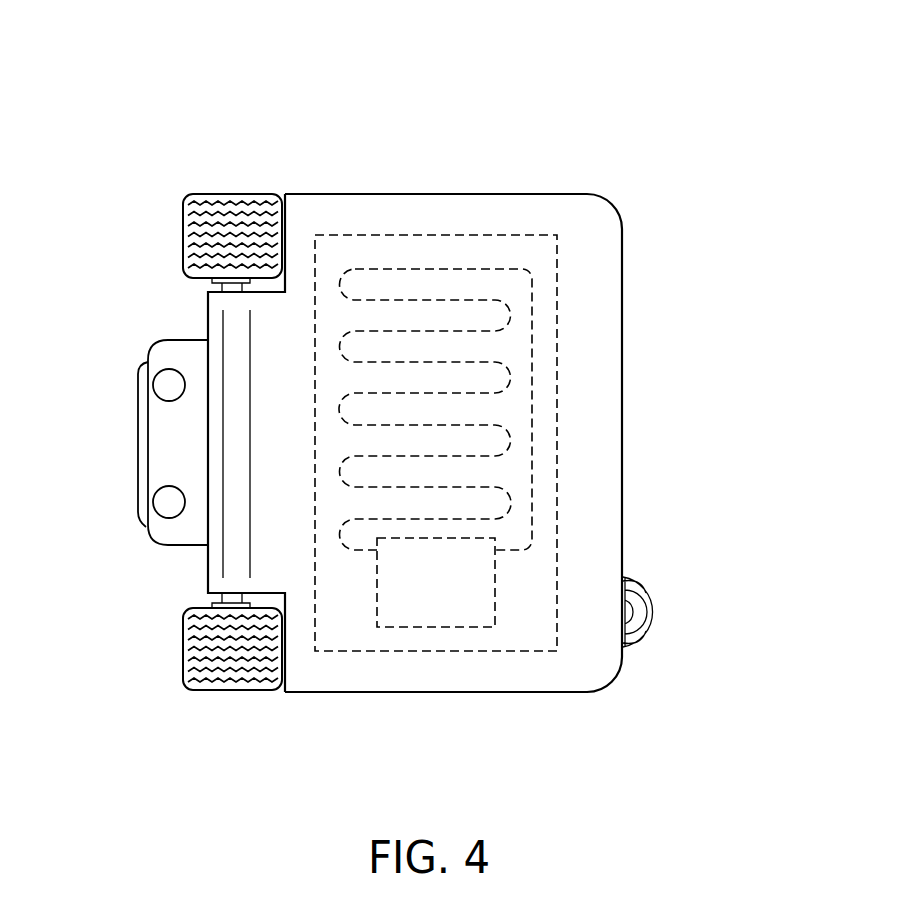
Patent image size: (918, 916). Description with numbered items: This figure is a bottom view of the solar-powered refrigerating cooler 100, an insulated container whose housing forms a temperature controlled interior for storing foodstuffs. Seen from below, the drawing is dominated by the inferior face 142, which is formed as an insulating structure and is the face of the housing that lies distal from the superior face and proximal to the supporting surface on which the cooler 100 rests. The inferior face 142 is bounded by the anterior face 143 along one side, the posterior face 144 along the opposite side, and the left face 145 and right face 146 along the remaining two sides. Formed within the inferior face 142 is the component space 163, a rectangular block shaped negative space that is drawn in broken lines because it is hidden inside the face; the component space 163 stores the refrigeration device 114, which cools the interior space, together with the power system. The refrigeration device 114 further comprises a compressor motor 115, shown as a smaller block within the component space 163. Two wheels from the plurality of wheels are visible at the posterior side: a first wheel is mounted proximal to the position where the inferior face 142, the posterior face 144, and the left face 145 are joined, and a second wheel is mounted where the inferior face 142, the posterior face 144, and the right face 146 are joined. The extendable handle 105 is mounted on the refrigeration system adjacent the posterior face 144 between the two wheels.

The solar-powered refrigerating cooler 100 is at (124, 104).
The extendable handle 105 is at (173, 455).
The refrigeration device 114 is at (510, 440).
The compressor motor 115 is at (478, 612).
The inferior face 142 is at (593, 228).
The anterior face 143 is at (622, 378).
The posterior face 144 is at (208, 563).
The left face 145 is at (460, 194).
The right face 146 is at (340, 692).
The component space 163 is at (537, 608).